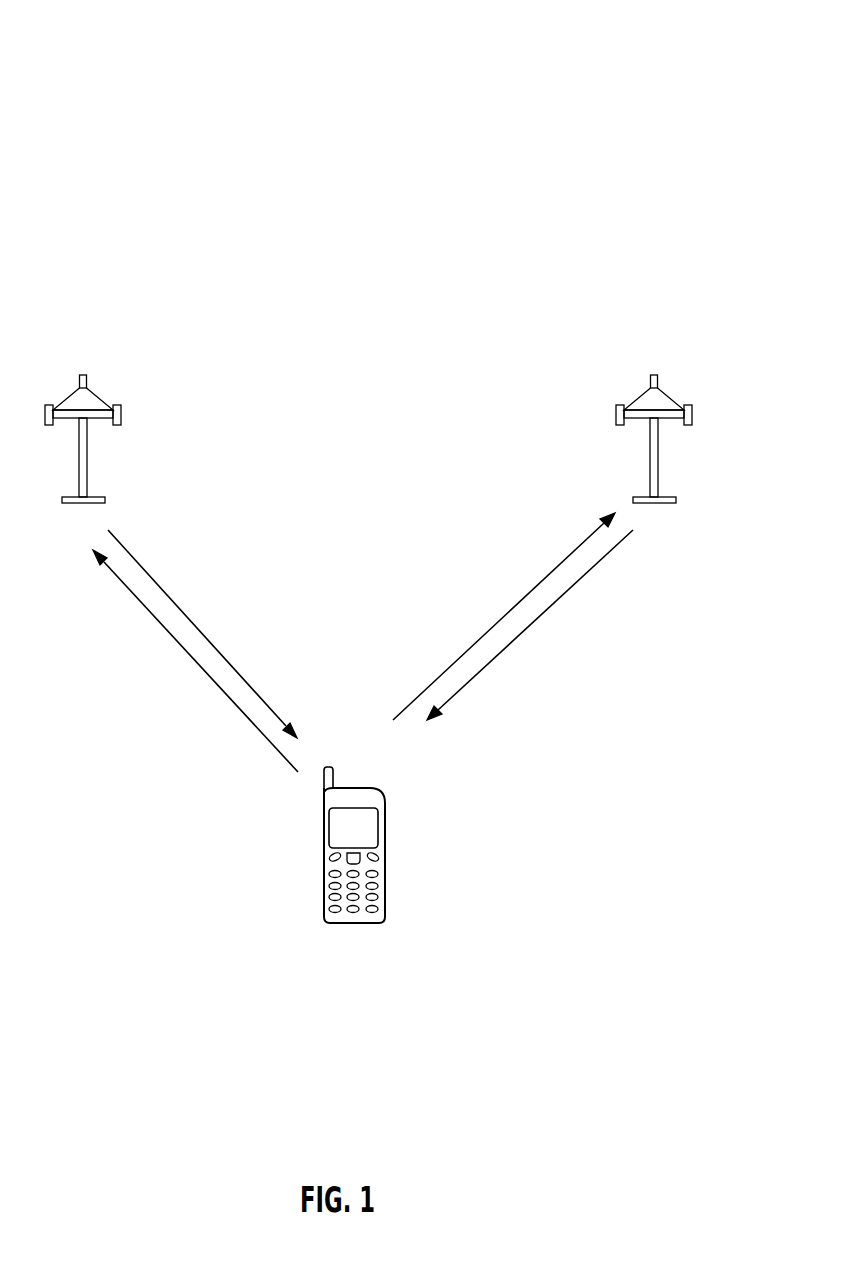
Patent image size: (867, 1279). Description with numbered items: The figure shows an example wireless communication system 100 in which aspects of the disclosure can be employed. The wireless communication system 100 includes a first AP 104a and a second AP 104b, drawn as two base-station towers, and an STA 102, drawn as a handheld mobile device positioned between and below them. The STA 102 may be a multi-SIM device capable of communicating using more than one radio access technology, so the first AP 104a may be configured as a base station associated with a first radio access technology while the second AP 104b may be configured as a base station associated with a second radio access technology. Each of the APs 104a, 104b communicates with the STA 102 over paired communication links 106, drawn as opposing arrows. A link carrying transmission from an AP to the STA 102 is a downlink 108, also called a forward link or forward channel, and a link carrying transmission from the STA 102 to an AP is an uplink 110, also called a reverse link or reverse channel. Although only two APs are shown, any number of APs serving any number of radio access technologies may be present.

The wireless communication system 100 is at (713, 72).
The STA 102 is at (357, 788).
The first AP 104a is at (82, 374).
The second AP 104b is at (653, 374).
The communication links 106 is at (513, 616).
The downlink 108 is at (198, 628).
The uplink 110 is at (187, 655).